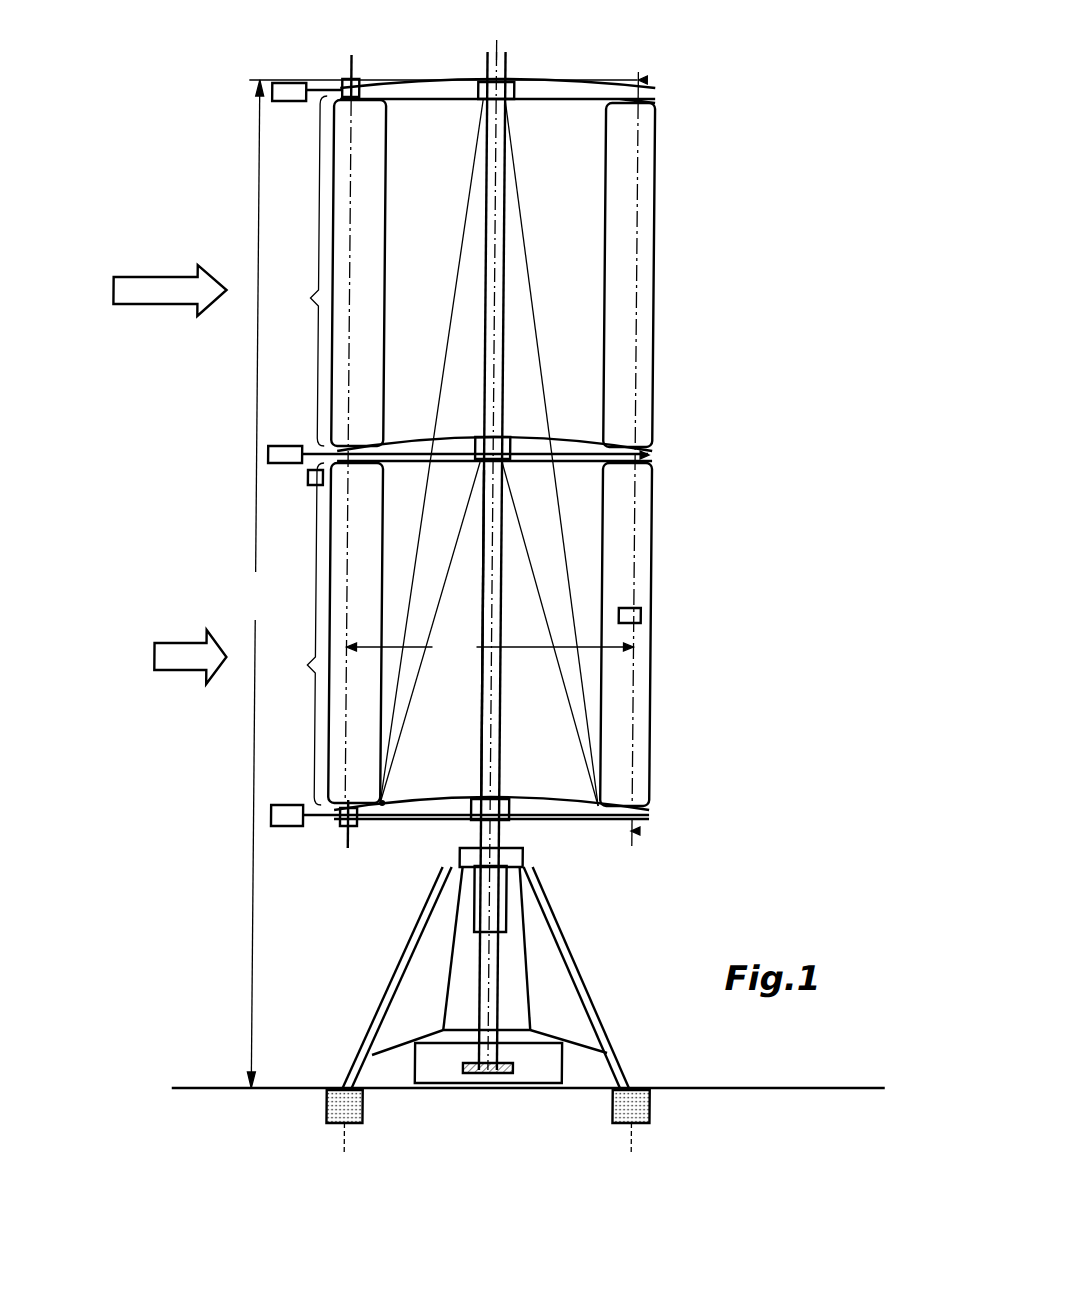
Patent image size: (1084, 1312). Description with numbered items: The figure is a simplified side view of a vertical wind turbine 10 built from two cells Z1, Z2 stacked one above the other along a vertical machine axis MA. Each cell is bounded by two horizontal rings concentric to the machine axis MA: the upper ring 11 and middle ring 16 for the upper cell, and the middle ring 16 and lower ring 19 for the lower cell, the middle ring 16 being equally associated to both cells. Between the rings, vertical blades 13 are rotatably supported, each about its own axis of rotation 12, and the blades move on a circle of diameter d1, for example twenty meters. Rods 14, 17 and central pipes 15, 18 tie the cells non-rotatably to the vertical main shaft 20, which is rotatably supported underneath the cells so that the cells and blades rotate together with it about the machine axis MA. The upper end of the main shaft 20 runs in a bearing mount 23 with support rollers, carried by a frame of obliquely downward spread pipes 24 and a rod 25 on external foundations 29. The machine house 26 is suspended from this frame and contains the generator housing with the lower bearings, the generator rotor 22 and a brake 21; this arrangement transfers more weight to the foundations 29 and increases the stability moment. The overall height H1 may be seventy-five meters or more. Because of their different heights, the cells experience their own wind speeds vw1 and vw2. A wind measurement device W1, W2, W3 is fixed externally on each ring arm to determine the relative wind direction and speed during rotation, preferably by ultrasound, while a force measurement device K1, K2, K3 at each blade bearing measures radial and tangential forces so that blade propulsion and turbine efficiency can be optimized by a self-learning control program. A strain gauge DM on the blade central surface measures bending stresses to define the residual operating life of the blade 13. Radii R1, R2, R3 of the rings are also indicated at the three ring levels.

The wind turbine 10 is at (786, 323).
The upper ring 11 is at (641, 103).
The axis of rotation 12 is at (639, 158).
The blade 13 is at (651, 222).
The rod 14 is at (546, 358).
The pipe 15 is at (495, 307).
The middle ring 16 is at (564, 446).
The rod 17 is at (547, 602).
The pipe 18 is at (503, 560).
The lower ring 19 is at (582, 805).
The main shaft 20 is at (493, 988).
The brake 21 is at (509, 1043).
The rotor (generator) 22 is at (522, 1067).
The bearing mount 23 is at (394, 802).
The pipe 24 is at (420, 932).
The rod 25 is at (533, 945).
The machine house 26 is at (381, 1055).
The foundations 29 is at (620, 1123).
The wind measurement device W1 is at (277, 807).
The wind measurement device W2 is at (272, 448).
The wind measurement device W3 is at (286, 80).
The force measurement device K1 is at (363, 826).
The force measurement device K2 is at (311, 480).
The force measurement device K3 is at (349, 77).
The lower rotor radius R1 is at (646, 832).
The middle rotor radius R2 is at (653, 455).
The upper rotor radius R3 is at (646, 79).
The cell Z1 is at (293, 634).
The cell Z2 is at (295, 271).
The height H1 is at (258, 584).
The diameter d1 is at (489, 649).
The strain gauge DM is at (646, 615).
The machine axis MA is at (499, 65).
The wind speed vw1 is at (175, 641).
The wind speed vw2 is at (170, 273).